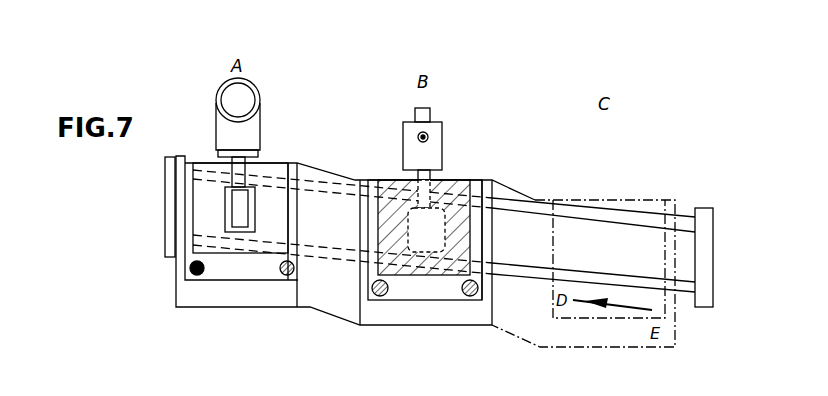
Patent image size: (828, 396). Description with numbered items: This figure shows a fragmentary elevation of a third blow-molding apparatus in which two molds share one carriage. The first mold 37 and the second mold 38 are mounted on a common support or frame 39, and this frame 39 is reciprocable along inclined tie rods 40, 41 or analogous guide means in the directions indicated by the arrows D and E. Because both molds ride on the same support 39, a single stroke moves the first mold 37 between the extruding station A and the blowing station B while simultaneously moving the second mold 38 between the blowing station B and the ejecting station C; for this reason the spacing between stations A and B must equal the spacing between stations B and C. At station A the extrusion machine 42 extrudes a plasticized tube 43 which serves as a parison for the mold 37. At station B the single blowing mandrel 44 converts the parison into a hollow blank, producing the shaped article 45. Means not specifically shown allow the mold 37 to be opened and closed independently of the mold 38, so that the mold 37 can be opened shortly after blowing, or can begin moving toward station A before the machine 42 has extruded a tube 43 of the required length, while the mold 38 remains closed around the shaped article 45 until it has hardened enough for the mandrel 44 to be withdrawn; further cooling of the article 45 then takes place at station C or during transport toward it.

The first mold 37 is at (210, 222).
The second mold 38 is at (457, 186).
The common support or frame 39 is at (267, 308).
The inclined tie rod 40 is at (686, 227).
The inclined tie rod 41 is at (520, 270).
The extrusion machine 42 is at (252, 140).
The plasticized tube 43 is at (240, 218).
The blowing mandrel 44 is at (417, 180).
The shaped article 45 is at (376, 278).